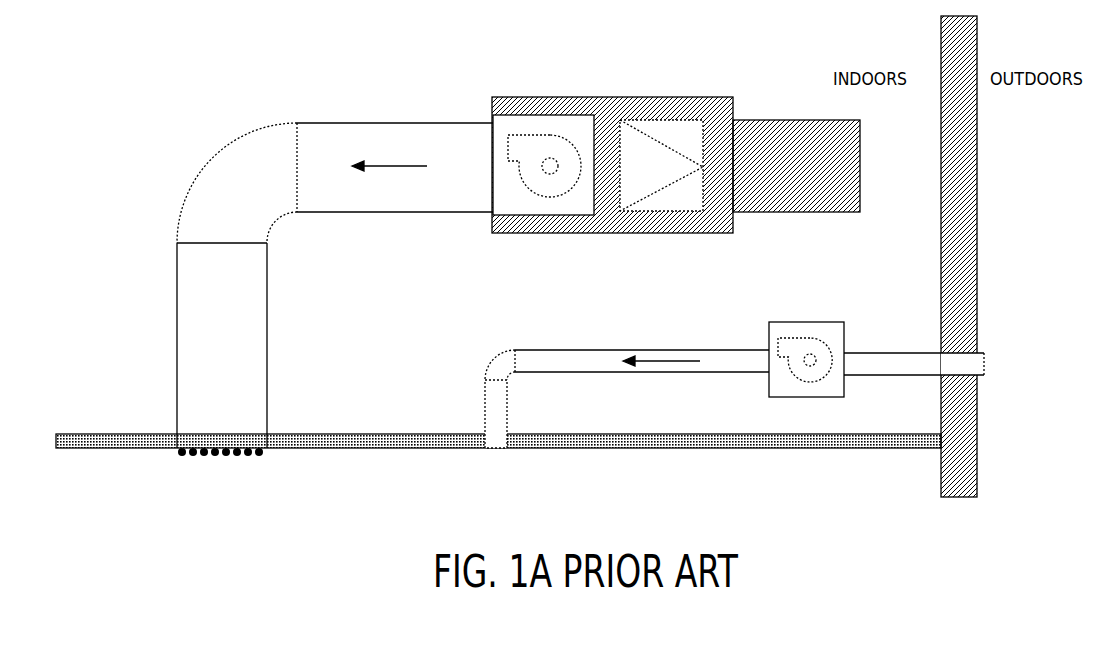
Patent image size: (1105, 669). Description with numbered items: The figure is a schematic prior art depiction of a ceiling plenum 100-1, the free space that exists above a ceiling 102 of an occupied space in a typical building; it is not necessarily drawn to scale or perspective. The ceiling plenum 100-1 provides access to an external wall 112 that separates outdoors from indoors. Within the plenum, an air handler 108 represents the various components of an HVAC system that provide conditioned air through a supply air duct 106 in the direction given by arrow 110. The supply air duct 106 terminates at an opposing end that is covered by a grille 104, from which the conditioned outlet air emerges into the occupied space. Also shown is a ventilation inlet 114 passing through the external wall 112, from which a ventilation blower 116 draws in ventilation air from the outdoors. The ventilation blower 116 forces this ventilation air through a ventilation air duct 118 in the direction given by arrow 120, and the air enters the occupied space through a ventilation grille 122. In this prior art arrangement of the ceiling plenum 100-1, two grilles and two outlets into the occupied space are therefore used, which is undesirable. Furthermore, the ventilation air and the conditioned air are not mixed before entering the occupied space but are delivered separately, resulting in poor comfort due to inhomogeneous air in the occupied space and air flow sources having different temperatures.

The ceiling plenum 100-1 is at (194, 48).
The ceiling 102 is at (329, 434).
The grille 104 is at (268, 453).
The supply air duct 106 is at (414, 123).
The air handler 108 is at (529, 97).
The arrow 110 is at (380, 163).
The external wall 112 is at (941, 222).
The ventilation inlet 114 is at (896, 352).
The ventilation blower 116 is at (806, 322).
The ventilation air duct 118 is at (573, 350).
The arrow 120 is at (662, 358).
The ventilation grille 122 is at (505, 451).